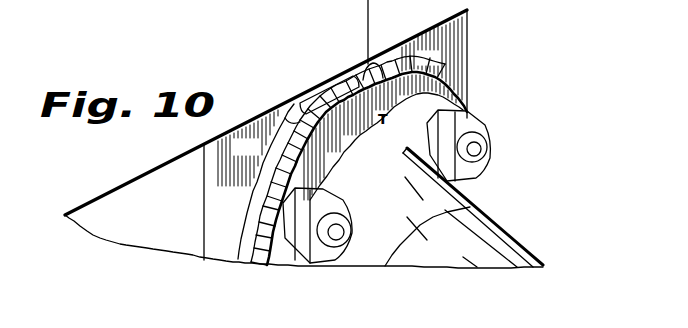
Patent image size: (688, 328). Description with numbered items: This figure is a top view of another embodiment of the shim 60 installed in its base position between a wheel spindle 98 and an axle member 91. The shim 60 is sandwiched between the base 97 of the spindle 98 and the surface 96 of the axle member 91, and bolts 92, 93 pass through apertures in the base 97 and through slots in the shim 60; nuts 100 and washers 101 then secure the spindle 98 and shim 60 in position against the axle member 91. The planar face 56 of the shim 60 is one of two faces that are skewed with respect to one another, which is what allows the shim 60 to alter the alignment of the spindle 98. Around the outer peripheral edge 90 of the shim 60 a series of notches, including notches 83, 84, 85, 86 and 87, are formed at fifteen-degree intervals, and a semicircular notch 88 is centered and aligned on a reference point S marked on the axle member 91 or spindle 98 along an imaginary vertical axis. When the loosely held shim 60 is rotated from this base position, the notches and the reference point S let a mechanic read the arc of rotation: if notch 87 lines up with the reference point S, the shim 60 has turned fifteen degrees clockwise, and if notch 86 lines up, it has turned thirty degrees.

The planar face 56 is at (367, 168).
The shim 60 is at (222, 243).
The notch 83 is at (246, 220).
The notch 84 is at (262, 178).
The notch 85 is at (276, 160).
The notch 86 is at (288, 118).
The notch 87 is at (318, 96).
The semicircular notch 88 is at (376, 64).
The outer peripheral edge 90 is at (432, 58).
The axle member 91 is at (92, 200).
The bolt 92 is at (352, 230).
The bolt 93 is at (489, 148).
The surface 96 is at (468, 70).
The base 97 is at (468, 96).
The wheel spindle 98 is at (510, 215).
The nut 100 is at (393, 94).
The washer 101 is at (412, 146).
The reference point S is at (366, 88).